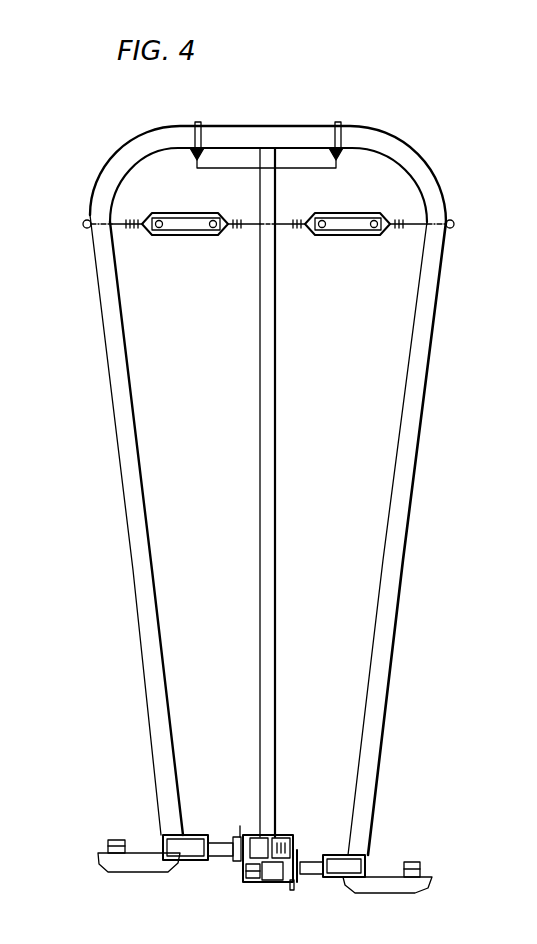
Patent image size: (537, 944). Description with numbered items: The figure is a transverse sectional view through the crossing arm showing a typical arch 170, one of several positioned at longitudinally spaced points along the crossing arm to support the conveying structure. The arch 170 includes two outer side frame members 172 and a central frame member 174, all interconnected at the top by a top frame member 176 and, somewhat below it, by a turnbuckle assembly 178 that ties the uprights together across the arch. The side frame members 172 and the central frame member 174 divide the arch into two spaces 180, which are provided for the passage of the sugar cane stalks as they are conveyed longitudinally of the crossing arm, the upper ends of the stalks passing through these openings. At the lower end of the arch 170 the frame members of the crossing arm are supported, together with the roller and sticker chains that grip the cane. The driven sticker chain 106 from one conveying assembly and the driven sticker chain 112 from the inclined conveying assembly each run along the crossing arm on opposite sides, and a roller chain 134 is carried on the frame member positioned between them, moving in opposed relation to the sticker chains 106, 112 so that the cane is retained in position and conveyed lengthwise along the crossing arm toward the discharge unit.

The arch 170 is at (290, 470).
The side frame members 172 is at (135, 480).
The central frame member 174 is at (267, 397).
The top frame member 176 is at (372, 137).
The turnbuckle assembly 178 is at (305, 237).
The spaces 180 is at (218, 457).
The conveying chain 106 is at (223, 837).
The sticker chain 112 is at (303, 847).
The roller chain 134 is at (240, 860).